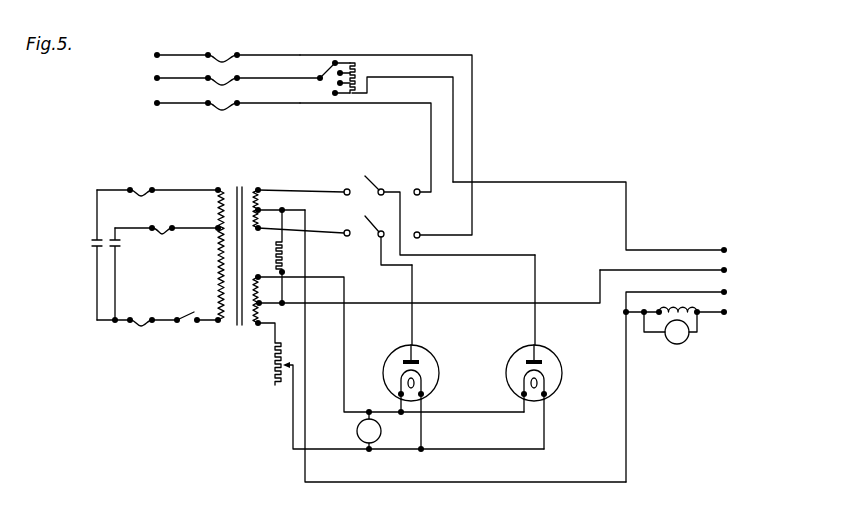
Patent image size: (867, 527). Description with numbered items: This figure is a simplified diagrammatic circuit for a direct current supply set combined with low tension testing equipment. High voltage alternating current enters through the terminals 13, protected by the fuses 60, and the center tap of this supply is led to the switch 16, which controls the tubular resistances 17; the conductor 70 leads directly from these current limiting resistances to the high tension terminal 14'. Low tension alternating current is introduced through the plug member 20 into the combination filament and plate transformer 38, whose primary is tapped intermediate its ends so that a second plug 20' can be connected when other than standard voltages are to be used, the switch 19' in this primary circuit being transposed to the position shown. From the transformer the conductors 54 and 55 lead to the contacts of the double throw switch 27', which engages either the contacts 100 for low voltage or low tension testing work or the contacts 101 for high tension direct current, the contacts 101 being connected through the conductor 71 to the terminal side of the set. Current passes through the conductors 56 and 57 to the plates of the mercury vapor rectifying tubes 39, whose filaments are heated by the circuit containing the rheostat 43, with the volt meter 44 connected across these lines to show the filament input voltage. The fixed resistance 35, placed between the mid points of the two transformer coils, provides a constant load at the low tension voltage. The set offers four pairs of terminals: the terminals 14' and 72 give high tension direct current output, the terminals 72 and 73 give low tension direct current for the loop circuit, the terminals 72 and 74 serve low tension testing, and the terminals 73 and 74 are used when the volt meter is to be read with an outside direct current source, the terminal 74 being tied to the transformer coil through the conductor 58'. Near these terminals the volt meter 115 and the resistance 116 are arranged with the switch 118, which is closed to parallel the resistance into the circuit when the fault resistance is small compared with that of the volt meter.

The terminals 13 is at (157, 103).
The fuses 60 is at (222, 60).
The switch 16 is at (326, 72).
The tubular resistances 17 is at (352, 62).
The plug member 20 is at (70, 255).
The second plug 20' is at (137, 274).
The primary circuit switch 19' is at (159, 336).
The combination filament and plate transformer 38 is at (240, 186).
The conductor 54 is at (310, 191).
The switch contacts 100 is at (347, 196).
The conductor 55 is at (347, 236).
The fixed resistance 35 is at (277, 256).
The double throw switch 27' is at (387, 169).
The switch contacts 101 is at (417, 195).
The conductor 70 is at (566, 182).
The high tension terminal 14' is at (745, 236).
The terminal 72 is at (725, 270).
The terminal 73 is at (725, 292).
The terminal 74 is at (725, 312).
The conductor 71 is at (472, 303).
The conductor 56 is at (537, 286).
The conductor 57 is at (413, 334).
The mercury vapor rectifying tubes 39 is at (437, 369).
The rheostat 43 is at (275, 366).
The volt meter 44 is at (356, 432).
The conductor 58' is at (465, 362).
The resistor 116 is at (690, 316).
The voltmeter 115 is at (686, 339).
The switch 118 is at (647, 302).